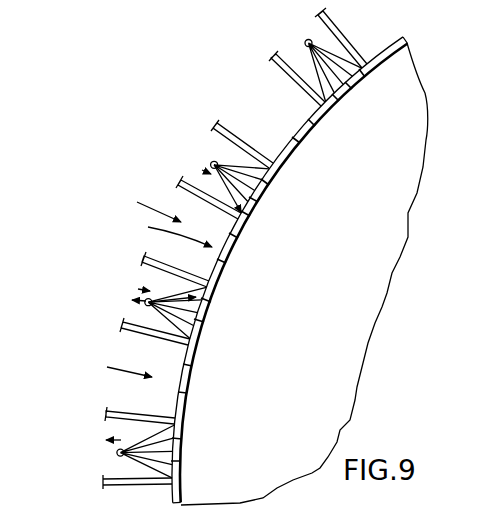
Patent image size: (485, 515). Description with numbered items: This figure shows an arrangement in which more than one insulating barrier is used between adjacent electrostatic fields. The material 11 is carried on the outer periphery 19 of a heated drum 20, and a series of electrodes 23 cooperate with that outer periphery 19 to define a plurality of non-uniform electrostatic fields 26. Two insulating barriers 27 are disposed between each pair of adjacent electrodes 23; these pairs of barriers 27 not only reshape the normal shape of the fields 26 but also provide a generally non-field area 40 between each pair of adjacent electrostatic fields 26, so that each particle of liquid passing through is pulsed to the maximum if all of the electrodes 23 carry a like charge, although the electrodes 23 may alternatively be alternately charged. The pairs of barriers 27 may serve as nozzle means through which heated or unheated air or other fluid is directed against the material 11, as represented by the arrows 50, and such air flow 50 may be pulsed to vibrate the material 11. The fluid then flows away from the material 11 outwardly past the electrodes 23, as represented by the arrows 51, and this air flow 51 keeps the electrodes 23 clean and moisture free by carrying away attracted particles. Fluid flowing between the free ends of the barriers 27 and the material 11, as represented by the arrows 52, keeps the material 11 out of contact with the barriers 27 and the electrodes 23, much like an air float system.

The material 11 is at (307, 125).
The outer periphery 19 is at (187, 397).
The heated drum 20 is at (410, 193).
The electrodes 23 is at (305, 40).
The electrostatic fields 26 is at (302, 80).
The insulating barriers 27 is at (155, 270).
The non-field area 40 is at (160, 230).
The arrows (air flow) 50 is at (158, 208).
The arrows (outward air flow) 51 is at (202, 170).
The arrows (fluid flow between barrier ends and material) 52 is at (224, 277).